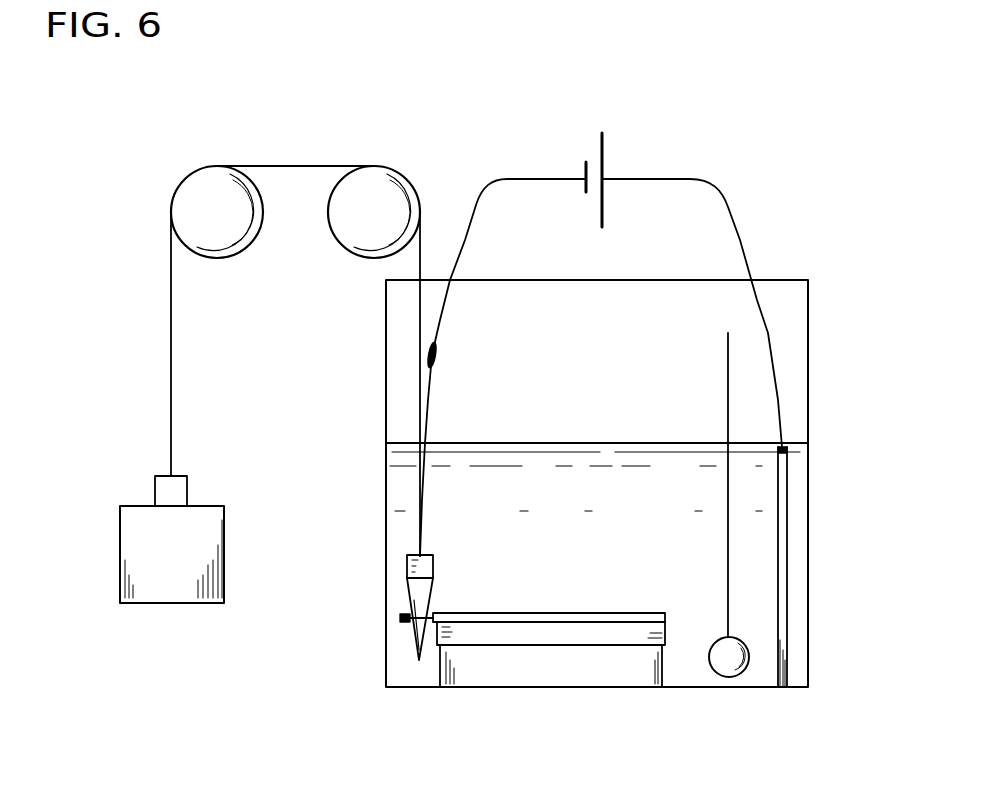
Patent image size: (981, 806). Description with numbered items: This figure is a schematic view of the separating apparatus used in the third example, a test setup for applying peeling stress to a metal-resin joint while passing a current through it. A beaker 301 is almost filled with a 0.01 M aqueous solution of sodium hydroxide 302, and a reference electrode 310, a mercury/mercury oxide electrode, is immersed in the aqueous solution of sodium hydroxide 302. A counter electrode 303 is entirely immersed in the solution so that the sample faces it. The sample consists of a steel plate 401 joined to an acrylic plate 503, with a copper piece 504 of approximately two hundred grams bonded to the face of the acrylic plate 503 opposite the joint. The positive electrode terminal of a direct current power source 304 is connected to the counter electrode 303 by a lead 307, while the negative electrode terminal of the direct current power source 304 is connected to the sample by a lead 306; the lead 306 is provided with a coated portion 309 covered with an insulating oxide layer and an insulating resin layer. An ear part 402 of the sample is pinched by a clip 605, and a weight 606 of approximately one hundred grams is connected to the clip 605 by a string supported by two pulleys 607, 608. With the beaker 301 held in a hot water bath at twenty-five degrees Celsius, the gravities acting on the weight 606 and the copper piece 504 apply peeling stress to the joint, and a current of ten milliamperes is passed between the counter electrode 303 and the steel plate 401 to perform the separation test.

The beaker 301 is at (810, 312).
The aqueous solution of sodium hydroxide 302 is at (602, 477).
The counter electrode 303 is at (787, 556).
The direct current power source 304 is at (595, 160).
The lead 306 is at (475, 213).
The lead 307 is at (727, 205).
The coated portion 309 is at (437, 355).
The reference electrode 310 is at (730, 668).
The steel plate 401 is at (566, 614).
The ear part 402 is at (403, 611).
The acrylic plate 503 is at (630, 635).
The copper piece 504 is at (568, 668).
The clip 605 is at (418, 590).
The weight 606 is at (165, 585).
The pulley 607 is at (370, 195).
The pulley 608 is at (217, 193).